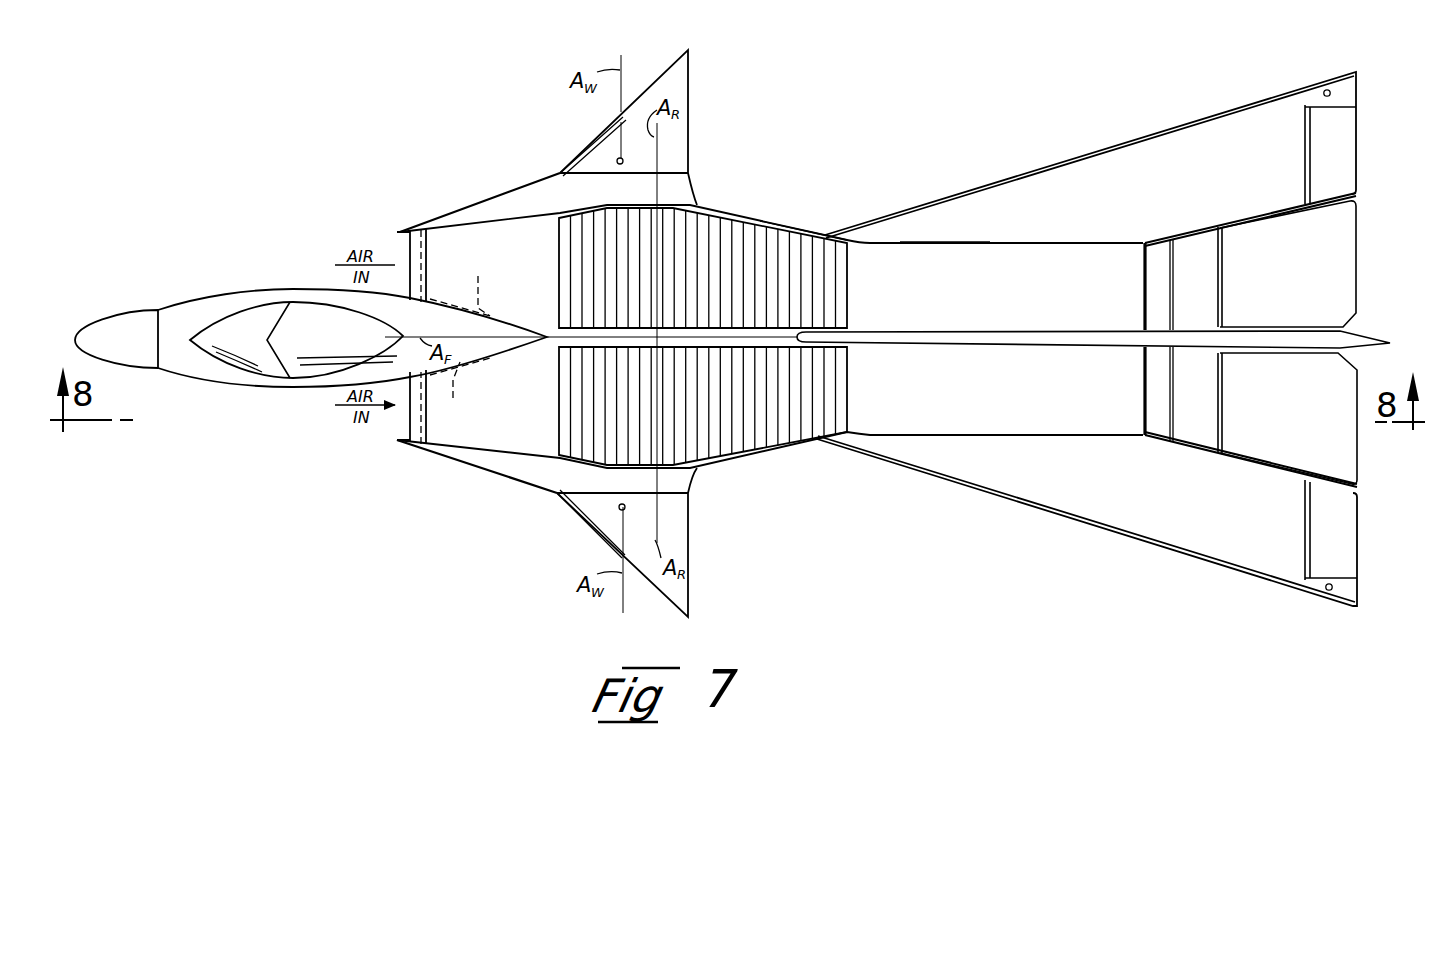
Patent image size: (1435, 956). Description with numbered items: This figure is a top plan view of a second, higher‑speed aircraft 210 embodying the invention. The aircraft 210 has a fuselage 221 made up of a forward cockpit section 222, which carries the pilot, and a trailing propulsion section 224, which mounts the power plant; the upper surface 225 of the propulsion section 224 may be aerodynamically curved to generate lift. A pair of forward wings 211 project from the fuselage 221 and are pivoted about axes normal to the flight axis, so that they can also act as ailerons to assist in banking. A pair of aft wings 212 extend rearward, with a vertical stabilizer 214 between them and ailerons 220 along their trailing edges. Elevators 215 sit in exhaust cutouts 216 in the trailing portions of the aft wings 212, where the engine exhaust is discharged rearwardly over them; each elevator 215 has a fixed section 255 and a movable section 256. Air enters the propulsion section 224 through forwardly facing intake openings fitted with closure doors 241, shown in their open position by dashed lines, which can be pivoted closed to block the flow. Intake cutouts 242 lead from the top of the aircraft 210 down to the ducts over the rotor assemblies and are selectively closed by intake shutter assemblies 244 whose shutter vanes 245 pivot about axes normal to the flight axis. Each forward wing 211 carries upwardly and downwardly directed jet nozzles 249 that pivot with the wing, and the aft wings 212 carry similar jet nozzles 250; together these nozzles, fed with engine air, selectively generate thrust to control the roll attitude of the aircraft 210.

The aircraft 210 is at (376, 204).
The forward wings 211 is at (685, 88).
The aft wings 212 is at (1100, 156).
The vertical stabilizer 214 is at (1097, 334).
The elevators 215 is at (1284, 229).
The exhaust cutouts 216 is at (1148, 249).
The ailerons 220 is at (1305, 153).
The fuselage 221 is at (310, 286).
The forward cockpit section 222 is at (250, 378).
The propulsion section 224 is at (946, 243).
The upper surface 225 is at (488, 230).
The closure doors 241 is at (421, 250).
The intake cutouts 242 is at (781, 225).
The intake shutter assemblies 244 is at (736, 240).
The shutter vanes 245 is at (577, 272).
The jet nozzles 249 is at (617, 160).
The jet nozzles 250 is at (1328, 90).
The fixed section 255 is at (1188, 240).
The movable section 256 is at (1299, 283).